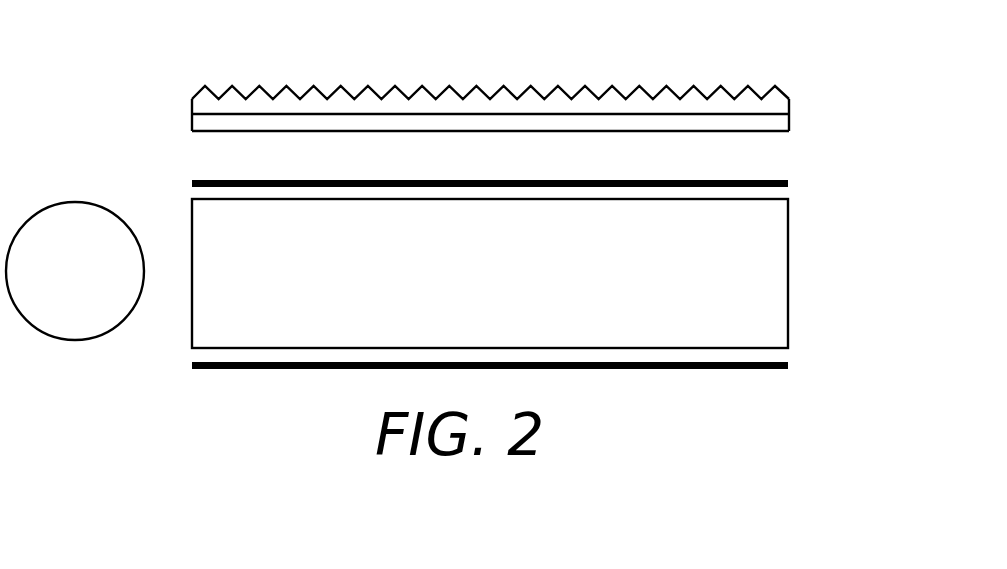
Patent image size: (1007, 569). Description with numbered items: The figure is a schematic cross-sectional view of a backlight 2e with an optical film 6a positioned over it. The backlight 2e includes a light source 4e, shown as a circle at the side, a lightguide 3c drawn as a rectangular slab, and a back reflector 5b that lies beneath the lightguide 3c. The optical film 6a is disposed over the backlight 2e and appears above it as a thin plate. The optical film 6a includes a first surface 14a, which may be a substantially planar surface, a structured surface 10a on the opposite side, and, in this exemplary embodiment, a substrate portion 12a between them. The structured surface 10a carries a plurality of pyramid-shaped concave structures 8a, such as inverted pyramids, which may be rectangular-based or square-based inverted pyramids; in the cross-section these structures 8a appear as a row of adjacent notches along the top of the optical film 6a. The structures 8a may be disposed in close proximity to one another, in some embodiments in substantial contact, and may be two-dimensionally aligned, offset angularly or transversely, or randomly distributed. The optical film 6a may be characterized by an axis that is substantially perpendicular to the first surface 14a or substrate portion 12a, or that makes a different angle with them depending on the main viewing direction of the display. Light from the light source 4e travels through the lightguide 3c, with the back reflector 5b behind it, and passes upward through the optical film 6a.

The optical film 6a is at (137, 75).
The pyramid-shaped concave structures 8a is at (358, 92).
The structured surface 10a is at (786, 94).
The substrate portion 12a is at (789, 124).
The first surface 14a is at (764, 134).
The light source 4e is at (73, 320).
The backlight 2e is at (808, 273).
The lightguide 3c is at (203, 320).
The back reflector 5b is at (665, 372).